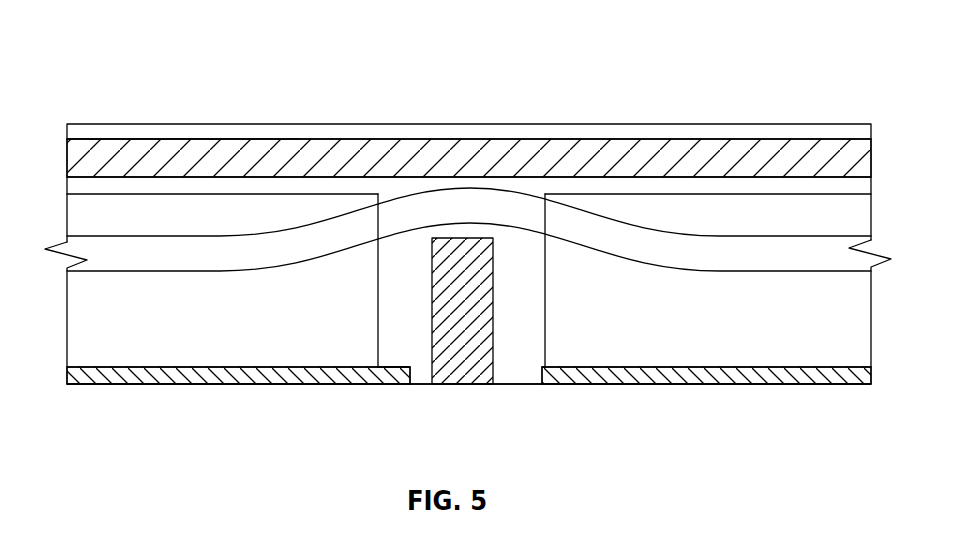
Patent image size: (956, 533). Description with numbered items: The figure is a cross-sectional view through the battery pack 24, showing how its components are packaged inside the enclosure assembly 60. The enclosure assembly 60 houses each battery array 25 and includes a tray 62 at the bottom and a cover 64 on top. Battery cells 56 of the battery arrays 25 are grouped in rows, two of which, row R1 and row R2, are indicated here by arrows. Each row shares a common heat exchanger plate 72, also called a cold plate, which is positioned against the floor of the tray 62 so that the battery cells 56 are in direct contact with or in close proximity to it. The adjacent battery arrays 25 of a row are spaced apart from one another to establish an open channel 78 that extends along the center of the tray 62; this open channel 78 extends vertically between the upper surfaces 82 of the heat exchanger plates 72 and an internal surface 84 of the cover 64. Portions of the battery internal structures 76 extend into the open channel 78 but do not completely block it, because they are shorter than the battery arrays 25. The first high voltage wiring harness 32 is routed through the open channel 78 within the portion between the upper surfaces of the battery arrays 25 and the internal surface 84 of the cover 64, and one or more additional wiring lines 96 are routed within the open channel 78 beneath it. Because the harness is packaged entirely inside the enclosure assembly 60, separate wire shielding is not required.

The battery pack 24 is at (142, 42).
The cover 64 is at (142, 123).
The first high voltage wiring harness 32 is at (697, 150).
The internal surface 84 is at (262, 127).
The battery array 25 is at (853, 213).
The row R1 is at (182, 185).
The row R2 is at (782, 185).
The wiring lines 96 is at (170, 255).
The battery cells 56 is at (190, 323).
The heat exchanger plate 72 is at (298, 375).
The upper surfaces 82 is at (395, 367).
The tray 62 is at (190, 386).
The enclosure assembly 60 is at (123, 393).
The battery internal structures 76 is at (455, 362).
The open channel 78 is at (507, 303).